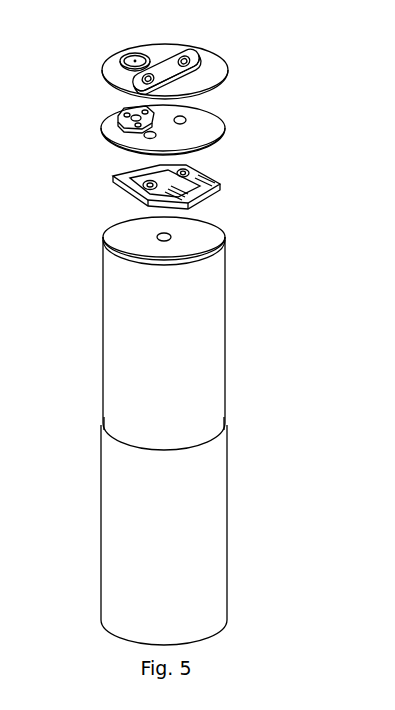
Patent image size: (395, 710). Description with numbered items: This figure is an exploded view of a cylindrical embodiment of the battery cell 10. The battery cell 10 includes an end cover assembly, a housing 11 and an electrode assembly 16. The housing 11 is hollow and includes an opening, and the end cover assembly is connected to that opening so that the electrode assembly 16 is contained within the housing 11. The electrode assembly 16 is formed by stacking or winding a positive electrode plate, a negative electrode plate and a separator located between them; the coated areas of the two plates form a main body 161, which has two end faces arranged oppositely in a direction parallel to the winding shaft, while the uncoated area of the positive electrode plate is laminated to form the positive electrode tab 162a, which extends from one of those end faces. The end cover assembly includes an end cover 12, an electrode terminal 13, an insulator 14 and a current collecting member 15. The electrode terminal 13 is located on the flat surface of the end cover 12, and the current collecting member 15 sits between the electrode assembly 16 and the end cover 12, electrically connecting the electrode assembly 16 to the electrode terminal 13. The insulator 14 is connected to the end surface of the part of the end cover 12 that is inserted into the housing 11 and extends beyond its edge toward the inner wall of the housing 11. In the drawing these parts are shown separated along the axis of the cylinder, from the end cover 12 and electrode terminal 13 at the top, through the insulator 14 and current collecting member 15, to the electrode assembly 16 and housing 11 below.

The battery cell 10 is at (38, 24).
The housing 11 is at (230, 473).
The end cover 12 is at (222, 66).
The electrode terminal 13 is at (180, 60).
The insulator 14 is at (206, 134).
The current collecting member 15 is at (216, 190).
The electrode assembly 16 is at (211, 333).
The main body 161 is at (222, 320).
The positive electrode tab 162a is at (226, 247).